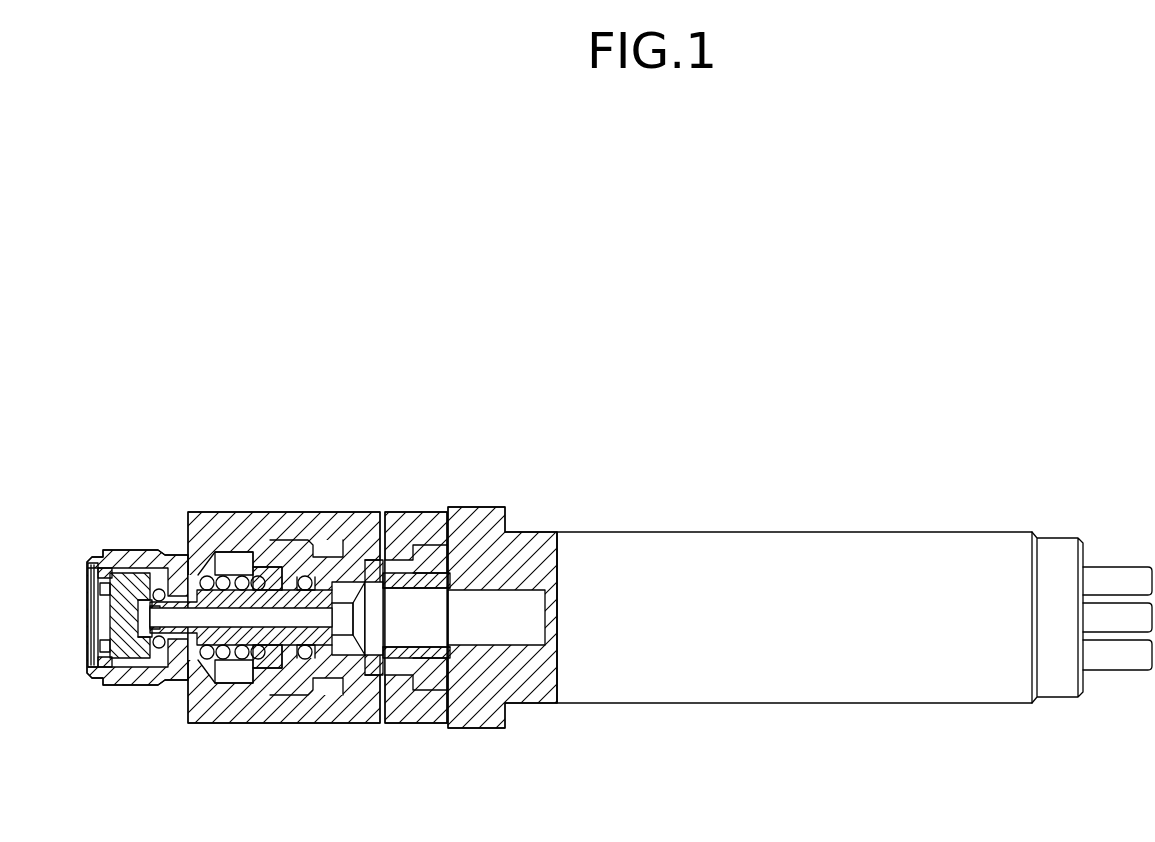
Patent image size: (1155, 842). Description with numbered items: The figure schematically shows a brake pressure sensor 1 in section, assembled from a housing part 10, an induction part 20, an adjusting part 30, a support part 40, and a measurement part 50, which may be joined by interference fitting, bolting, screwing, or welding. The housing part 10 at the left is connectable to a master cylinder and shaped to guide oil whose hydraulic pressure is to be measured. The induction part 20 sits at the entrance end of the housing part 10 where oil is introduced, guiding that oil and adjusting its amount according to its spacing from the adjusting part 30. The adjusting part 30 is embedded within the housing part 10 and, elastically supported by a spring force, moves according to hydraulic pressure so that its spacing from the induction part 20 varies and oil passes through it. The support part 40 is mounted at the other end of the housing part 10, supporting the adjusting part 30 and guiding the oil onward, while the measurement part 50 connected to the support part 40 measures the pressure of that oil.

The brake pressure sensor 1 is at (1081, 345).
The housing part 10 is at (133, 690).
The induction part 20 is at (128, 608).
The adjusting part 30 is at (262, 572).
The support part 40 is at (415, 713).
The measurement part 50 is at (779, 697).